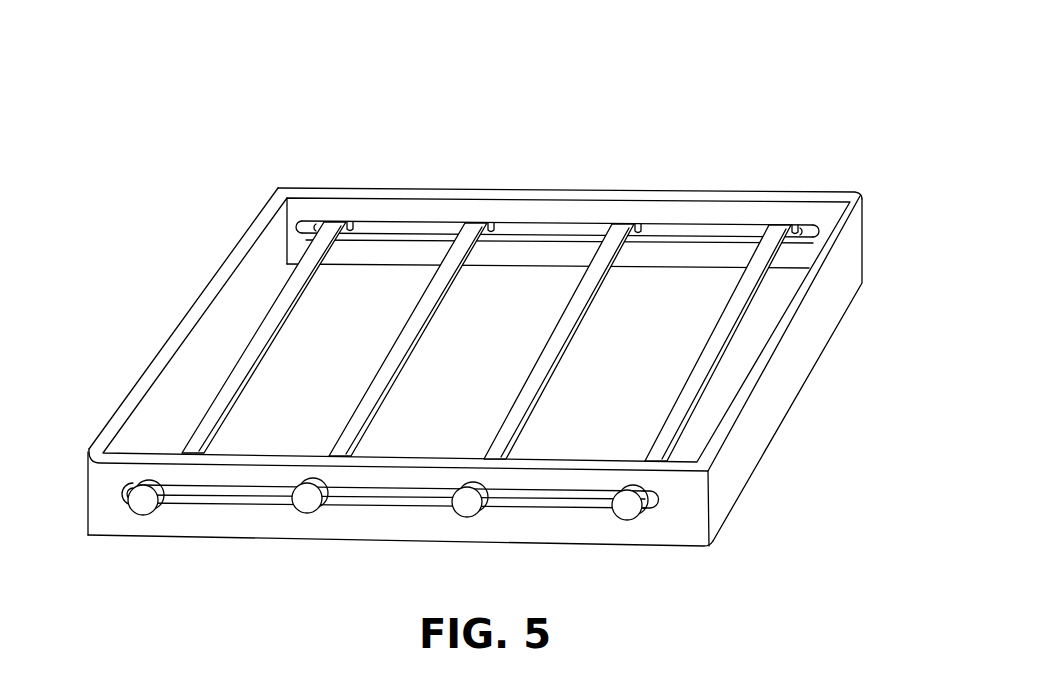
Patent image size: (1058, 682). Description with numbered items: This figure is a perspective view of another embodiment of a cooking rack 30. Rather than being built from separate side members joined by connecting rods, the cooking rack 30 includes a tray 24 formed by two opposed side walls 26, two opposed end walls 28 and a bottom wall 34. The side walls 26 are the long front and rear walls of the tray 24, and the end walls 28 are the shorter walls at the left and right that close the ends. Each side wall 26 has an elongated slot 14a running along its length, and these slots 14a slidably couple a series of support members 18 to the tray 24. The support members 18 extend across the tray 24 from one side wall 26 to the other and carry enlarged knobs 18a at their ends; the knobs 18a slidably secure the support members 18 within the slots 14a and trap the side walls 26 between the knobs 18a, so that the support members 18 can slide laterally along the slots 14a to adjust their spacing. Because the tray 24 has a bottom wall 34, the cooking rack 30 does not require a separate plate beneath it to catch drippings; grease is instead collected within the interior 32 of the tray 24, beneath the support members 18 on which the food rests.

The cooking rack 30 is at (463, 316).
The tray 24 is at (475, 307).
The side walls 26 is at (717, 193).
The end walls 28 is at (192, 322).
The interior 32 is at (476, 296).
The bottom wall 34 is at (442, 387).
The elongated slot 14a is at (666, 234).
The support members 18 is at (253, 350).
The knobs 18a is at (145, 500).